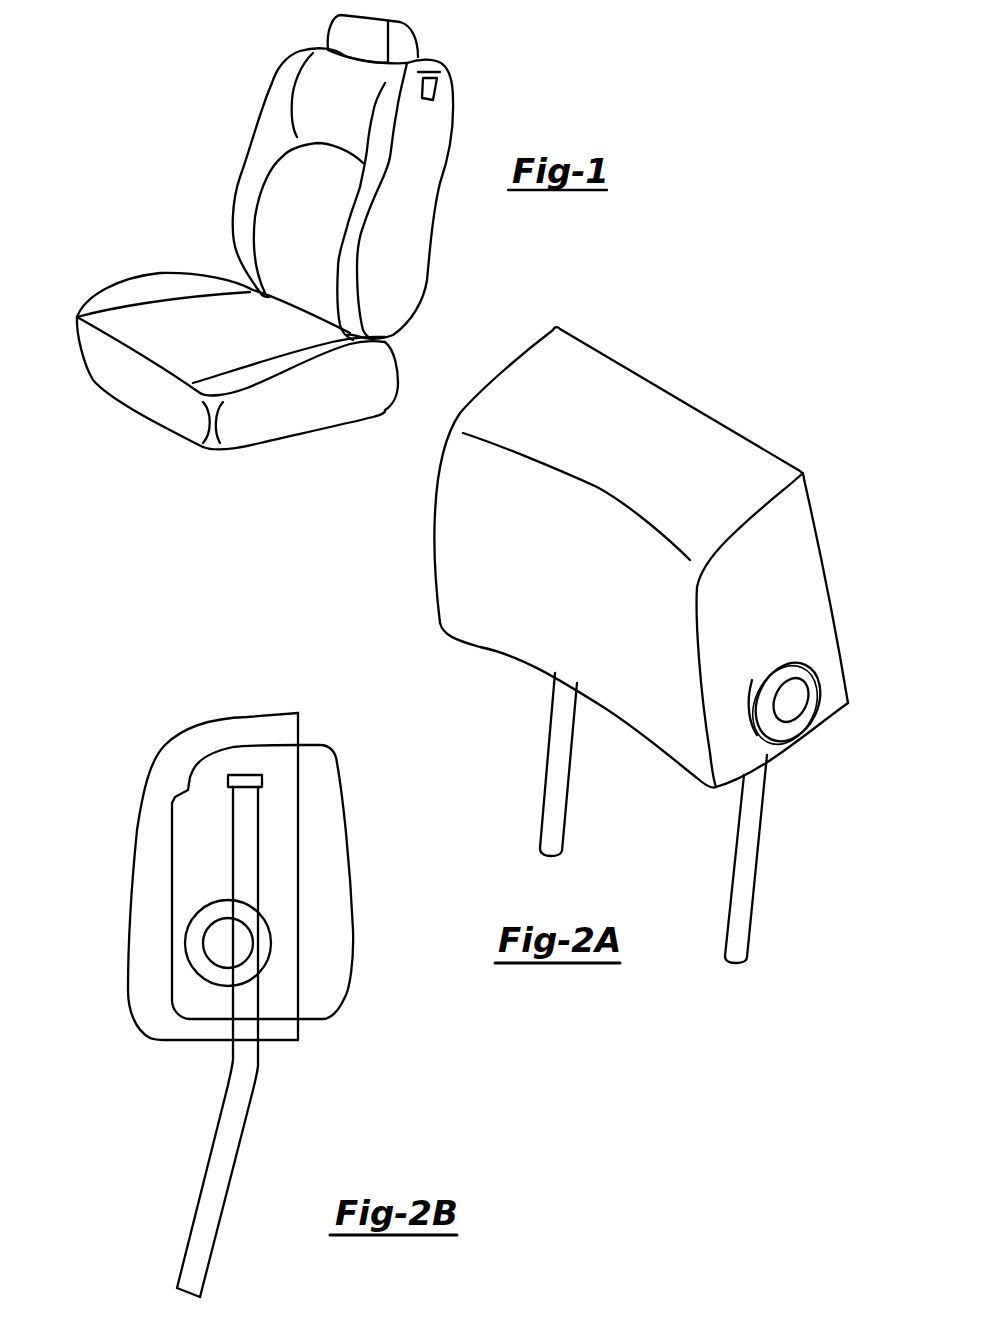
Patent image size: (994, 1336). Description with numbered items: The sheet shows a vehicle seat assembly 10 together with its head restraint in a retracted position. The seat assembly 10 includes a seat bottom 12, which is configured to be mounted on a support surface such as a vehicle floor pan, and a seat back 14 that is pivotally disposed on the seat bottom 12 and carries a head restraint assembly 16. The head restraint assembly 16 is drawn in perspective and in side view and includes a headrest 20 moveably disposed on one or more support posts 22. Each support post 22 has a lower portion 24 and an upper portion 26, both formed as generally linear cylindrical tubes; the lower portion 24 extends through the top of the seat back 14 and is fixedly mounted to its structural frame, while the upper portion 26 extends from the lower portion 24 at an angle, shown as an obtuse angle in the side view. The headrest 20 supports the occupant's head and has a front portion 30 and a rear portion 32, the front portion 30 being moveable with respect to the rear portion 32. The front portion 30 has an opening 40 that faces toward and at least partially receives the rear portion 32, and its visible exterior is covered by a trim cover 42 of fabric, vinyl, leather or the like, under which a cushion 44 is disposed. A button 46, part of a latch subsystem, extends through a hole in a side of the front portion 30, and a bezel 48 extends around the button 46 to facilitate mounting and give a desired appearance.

In FIG. 1, the seat assembly 10 is at (282, 58).
In FIG. 1, the seat bottom 12 is at (185, 272).
In FIG. 1, the seat back 14 is at (270, 100).
In FIG. 1, the head restraint assembly 16 is at (416, 38).
In FIG. 2A, the head restraint assembly 16 is at (745, 368).
In FIG. 2A, the headrest 20 is at (593, 347).
In FIG. 2A, the support posts 22 is at (572, 767).
In FIG. 2B, the support posts 22 is at (208, 1168).
In FIG. 2B, the lower portion 24 is at (247, 1113).
In FIG. 2B, the upper portion 26 is at (257, 822).
In FIG. 2B, the front portion 30 is at (146, 781).
In FIG. 2B, the rear portion 32 is at (342, 776).
In FIG. 2B, the opening 40 is at (299, 729).
In FIG. 2B, the trim cover 42 is at (235, 716).
In FIG. 2B, the cushion 44 is at (157, 835).
In FIG. 2A, the button 46 is at (788, 702).
In FIG. 2B, the button 46 is at (226, 942).
In FIG. 2A, the bezel 48 is at (820, 673).
In FIG. 2B, the bezel 48 is at (193, 913).